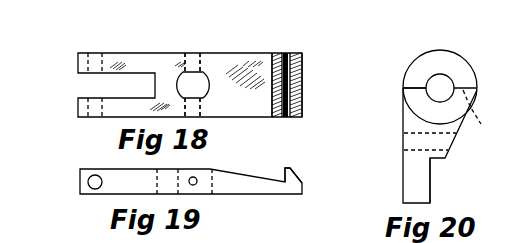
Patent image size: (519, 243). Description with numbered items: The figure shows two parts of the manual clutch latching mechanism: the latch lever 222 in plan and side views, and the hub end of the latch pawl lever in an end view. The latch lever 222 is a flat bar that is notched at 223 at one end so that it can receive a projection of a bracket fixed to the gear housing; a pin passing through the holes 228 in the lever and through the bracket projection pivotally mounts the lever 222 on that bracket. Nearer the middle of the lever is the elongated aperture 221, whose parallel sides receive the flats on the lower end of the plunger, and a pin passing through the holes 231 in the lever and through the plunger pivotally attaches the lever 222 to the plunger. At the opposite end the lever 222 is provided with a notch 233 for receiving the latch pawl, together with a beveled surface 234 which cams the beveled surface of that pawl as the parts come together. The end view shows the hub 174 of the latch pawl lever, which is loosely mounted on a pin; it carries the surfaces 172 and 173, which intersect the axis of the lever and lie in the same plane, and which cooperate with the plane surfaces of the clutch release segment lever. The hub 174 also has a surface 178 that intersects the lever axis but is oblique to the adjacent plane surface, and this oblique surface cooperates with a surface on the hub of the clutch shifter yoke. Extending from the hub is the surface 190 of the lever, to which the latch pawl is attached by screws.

In FIG. 18, the notch 223 is at (98, 85).
In FIG. 18, the elongated aperture 221 is at (203, 80).
In FIG. 18, the holes 231 is at (192, 72).
In FIG. 18, the latch lever 222 is at (259, 106).
In FIG. 19, the latch lever 222 is at (240, 180).
In FIG. 19, the holes 228 is at (88, 182).
In FIG. 19, the notch 233 is at (286, 170).
In FIG. 19, the beveled surface 234 is at (297, 172).
In FIG. 20, the hub 174 is at (433, 50).
In FIG. 20, the surface 173 is at (411, 82).
In FIG. 20, the surface 172 is at (466, 82).
In FIG. 20, the surface 178 is at (484, 116).
In FIG. 20, the surface 190 is at (431, 177).